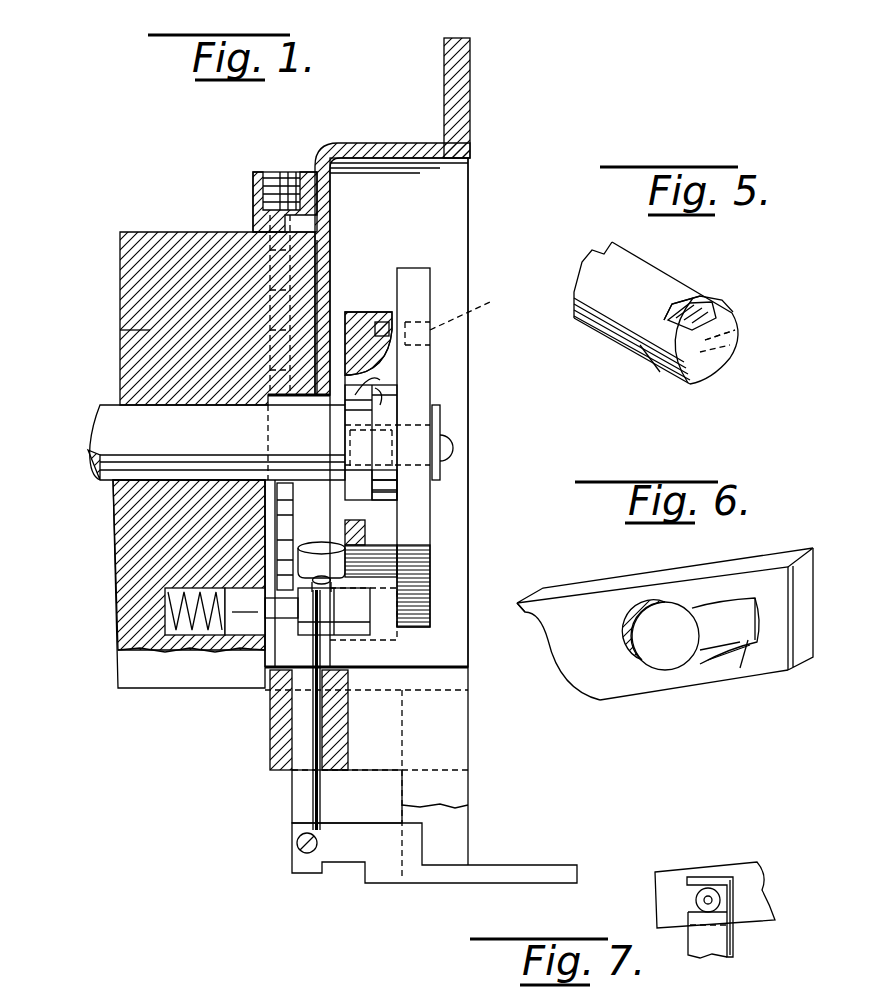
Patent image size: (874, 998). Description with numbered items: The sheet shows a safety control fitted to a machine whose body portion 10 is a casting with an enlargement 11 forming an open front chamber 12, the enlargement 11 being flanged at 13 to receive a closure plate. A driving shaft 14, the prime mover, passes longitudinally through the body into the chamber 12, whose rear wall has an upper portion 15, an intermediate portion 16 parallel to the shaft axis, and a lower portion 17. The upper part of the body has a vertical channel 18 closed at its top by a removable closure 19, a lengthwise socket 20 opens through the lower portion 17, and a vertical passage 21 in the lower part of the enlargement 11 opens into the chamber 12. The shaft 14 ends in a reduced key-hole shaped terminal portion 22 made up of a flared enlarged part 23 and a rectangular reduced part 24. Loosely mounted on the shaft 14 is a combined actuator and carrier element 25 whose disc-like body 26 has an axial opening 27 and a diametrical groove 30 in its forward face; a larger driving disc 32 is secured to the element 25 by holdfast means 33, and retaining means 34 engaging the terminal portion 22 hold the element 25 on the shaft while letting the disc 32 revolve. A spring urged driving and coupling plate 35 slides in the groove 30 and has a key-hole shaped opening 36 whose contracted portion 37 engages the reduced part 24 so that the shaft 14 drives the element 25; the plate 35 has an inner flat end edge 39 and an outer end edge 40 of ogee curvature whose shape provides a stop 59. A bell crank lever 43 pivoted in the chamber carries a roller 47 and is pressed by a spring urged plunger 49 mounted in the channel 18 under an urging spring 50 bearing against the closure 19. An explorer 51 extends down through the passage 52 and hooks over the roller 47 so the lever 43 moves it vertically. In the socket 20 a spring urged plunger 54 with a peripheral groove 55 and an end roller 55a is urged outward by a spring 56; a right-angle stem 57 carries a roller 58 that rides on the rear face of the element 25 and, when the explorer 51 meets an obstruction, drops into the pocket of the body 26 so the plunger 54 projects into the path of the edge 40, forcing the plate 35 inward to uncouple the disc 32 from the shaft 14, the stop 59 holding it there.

In FIG. 1, the body portion 10 is at (120, 660).
In FIG. 1, the enlargement 11 is at (378, 142).
In FIG. 1, the open front chamber 12 is at (455, 195).
In FIG. 1, the flange 13 is at (463, 103).
In FIG. 1, the driving shaft 14 is at (97, 483).
In FIG. 5, the driving shaft 14 is at (614, 332).
In FIG. 1, the upper portion of rear wall 15 is at (322, 285).
In FIG. 1, the intermediate portion of rear wall 16 is at (348, 312).
In FIG. 1, the lower portion of rear wall 17 is at (260, 520).
In FIG. 1, the channel 18 is at (212, 228).
In FIG. 1, the removable closure 19 is at (282, 172).
In FIG. 1, the socket 20 is at (230, 635).
In FIG. 1, the passage 21 is at (242, 798).
In FIG. 5, the terminal portion 22 is at (660, 372).
In FIG. 5, the enlarged part 23 is at (725, 372).
In FIG. 5, the reduced part 24 is at (735, 320).
In FIG. 1, the combined actuator and carrier element 25 is at (397, 488).
In FIG. 1, the disc-like body 26 is at (388, 322).
In FIG. 1, the opening 27 is at (318, 542).
In FIG. 1, the groove 30 is at (385, 392).
In FIG. 1, the disc 32 is at (430, 285).
In FIG. 1, the holdfast means 33 is at (461, 315).
In FIG. 1, the retaining means 34 is at (442, 430).
In FIG. 6, the driving and coupling plate 35 is at (746, 676).
In FIG. 6, the key-hole shaped opening 36 is at (688, 606).
In FIG. 6, the contracted portion 37 is at (730, 605).
In FIG. 6, the inner flat end edge 39 is at (805, 652).
In FIG. 6, the outer end edge 40 is at (555, 672).
In FIG. 7, the bell crank lever 43 is at (758, 906).
In FIG. 7, the roller 47 is at (696, 900).
In FIG. 1, the spring urged plunger 49 is at (122, 330).
In FIG. 1, the urging spring 50 is at (305, 226).
In FIG. 1, the explorer 51 is at (322, 800).
In FIG. 7, the explorer 51 is at (735, 944).
In FIG. 7, the passage 52 is at (733, 882).
In FIG. 1, the spring urged plunger 54 is at (262, 655).
In FIG. 1, the peripheral groove 55 is at (290, 620).
In FIG. 1, the roller 55a is at (350, 610).
In FIG. 1, the urging spring 56 is at (170, 615).
In FIG. 1, the stem 57 is at (360, 670).
In FIG. 1, the roller 58 is at (385, 555).
In FIG. 1, the stop 59 is at (385, 398).
In FIG. 6, the stop 59 is at (527, 615).